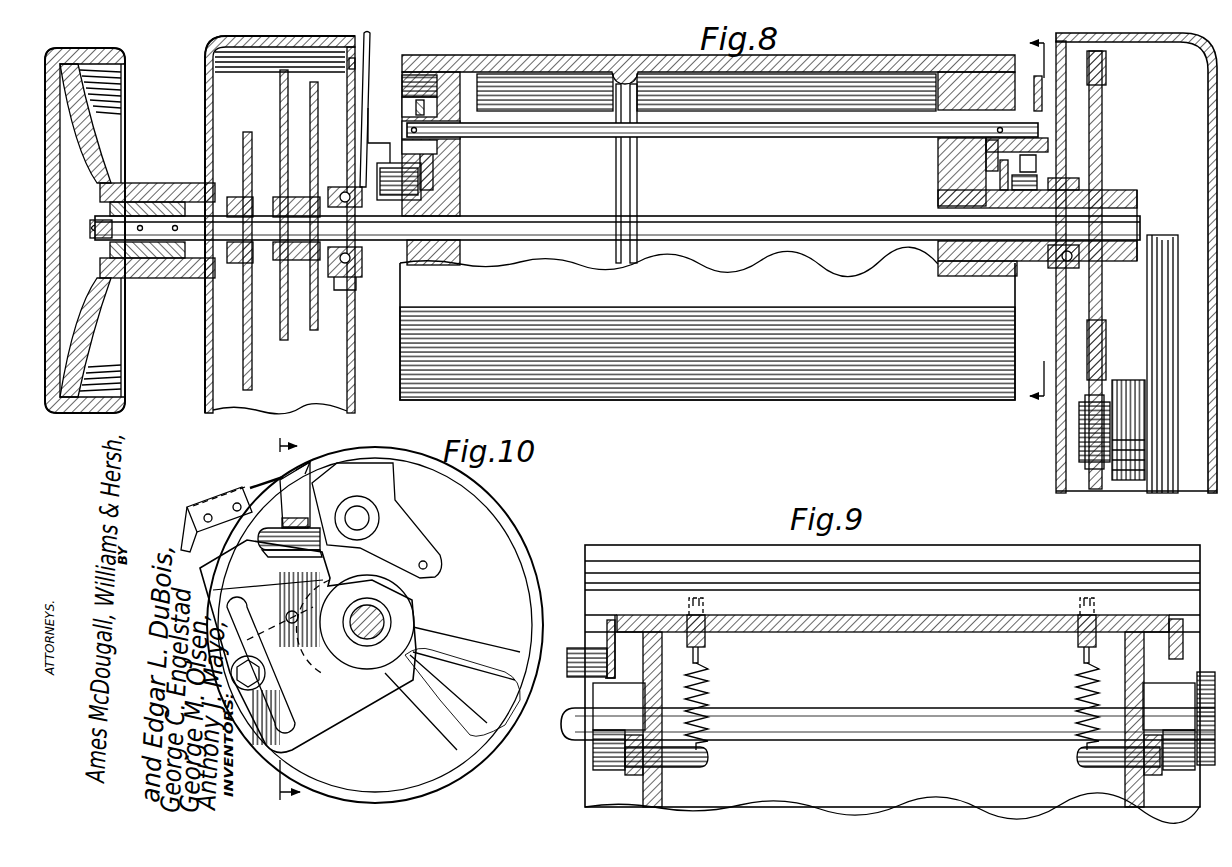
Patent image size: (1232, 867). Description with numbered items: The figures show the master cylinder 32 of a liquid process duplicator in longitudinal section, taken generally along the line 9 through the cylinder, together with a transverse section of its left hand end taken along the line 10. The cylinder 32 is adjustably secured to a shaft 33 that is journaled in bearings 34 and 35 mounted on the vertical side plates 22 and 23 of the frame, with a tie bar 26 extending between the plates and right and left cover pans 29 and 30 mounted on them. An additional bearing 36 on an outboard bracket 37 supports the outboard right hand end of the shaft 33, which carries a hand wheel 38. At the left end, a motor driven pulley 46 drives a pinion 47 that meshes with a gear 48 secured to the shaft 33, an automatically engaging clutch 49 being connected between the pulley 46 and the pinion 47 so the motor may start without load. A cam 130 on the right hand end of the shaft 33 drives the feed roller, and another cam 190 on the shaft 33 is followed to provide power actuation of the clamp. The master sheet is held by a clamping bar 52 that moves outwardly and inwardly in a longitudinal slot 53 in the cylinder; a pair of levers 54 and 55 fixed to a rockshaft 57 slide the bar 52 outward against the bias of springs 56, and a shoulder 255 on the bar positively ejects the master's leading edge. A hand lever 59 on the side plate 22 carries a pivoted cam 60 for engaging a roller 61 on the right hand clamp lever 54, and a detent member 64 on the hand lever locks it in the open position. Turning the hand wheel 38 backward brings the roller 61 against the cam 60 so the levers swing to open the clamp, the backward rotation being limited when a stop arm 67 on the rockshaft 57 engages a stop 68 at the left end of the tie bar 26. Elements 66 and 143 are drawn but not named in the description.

In FIG. 8, the section line 10— 10 is at (1040, 220).
In FIG. 10, the section line 9— 9 is at (287, 619).
In FIG. 8, the right hand side plate 22 is at (355, 384).
In FIG. 8, the left hand side plate 23 is at (1056, 346).
In FIG. 10, the tie bar 26 is at (208, 504).
In FIG. 8, the right cover pan 29 is at (205, 364).
In FIG. 8, the left cover pan 30 is at (1208, 194).
In FIG. 8, the master cylinder 32 is at (597, 58).
In FIG. 10, the master cylinder 32 is at (490, 506).
In FIG. 9, the master cylinder 32 is at (968, 548).
In FIG. 8, the cylinder shaft 33 is at (716, 216).
In FIG. 10, the cylinder shaft 33 is at (396, 620).
In FIG. 9, the cylinder shaft 33 is at (910, 740).
In FIG. 8, the bearing 34 is at (355, 262).
In FIG. 8, the bearing 35 is at (1058, 268).
In FIG. 8, the additional bearing 36 is at (190, 278).
In FIG. 8, the outboard bracket 37 is at (213, 190).
In FIG. 8, the hand wheel 38 is at (88, 414).
In FIG. 8, the pulley 46 is at (1147, 296).
In FIG. 8, the pinion 47 is at (1096, 466).
In FIG. 8, the gear 48 is at (1103, 138).
In FIG. 8, the automatically engaging clutch 49 is at (1127, 378).
In FIG. 10, the clamping bar 52 is at (290, 484).
In FIG. 9, the clamping bar 52 is at (898, 592).
In FIG. 10, the longitudinal slot 53 is at (306, 472).
In FIG. 8, the right hand clamp lever 54 is at (403, 87).
In FIG. 10, the right hand clamp lever 54 is at (266, 533).
In FIG. 9, the right hand clamp lever 54 is at (606, 630).
In FIG. 8, the clamp lever 55 is at (1004, 170).
In FIG. 10, the clamp lever 55 is at (300, 556).
In FIG. 9, the clamp lever 55 is at (1180, 655).
In FIG. 9, the springs 56 is at (709, 694).
In FIG. 8, the rockshaft 57 is at (556, 132).
In FIG. 10, the rockshaft 57 is at (372, 520).
In FIG. 8, the hand lever 59 is at (369, 47).
In FIG. 8, the cam 60 is at (369, 112).
In FIG. 8, the roller 61 is at (400, 200).
In FIG. 9, the roller 61 is at (574, 650).
In FIG. 8, the detent member 64 is at (356, 65).
In FIG. 8, the bracket 66 is at (380, 160).
In FIG. 8, the stop arm 67 is at (1034, 80).
In FIG. 10, the stop arm 67 is at (264, 554).
In FIG. 10, the stop 68 is at (262, 488).
In FIG. 8, the cam 130 is at (313, 330).
In FIG. 8, the plate 143 is at (284, 340).
In FIG. 8, the cam 190 is at (252, 383).
In FIG. 9, the shoulder 255 is at (712, 607).